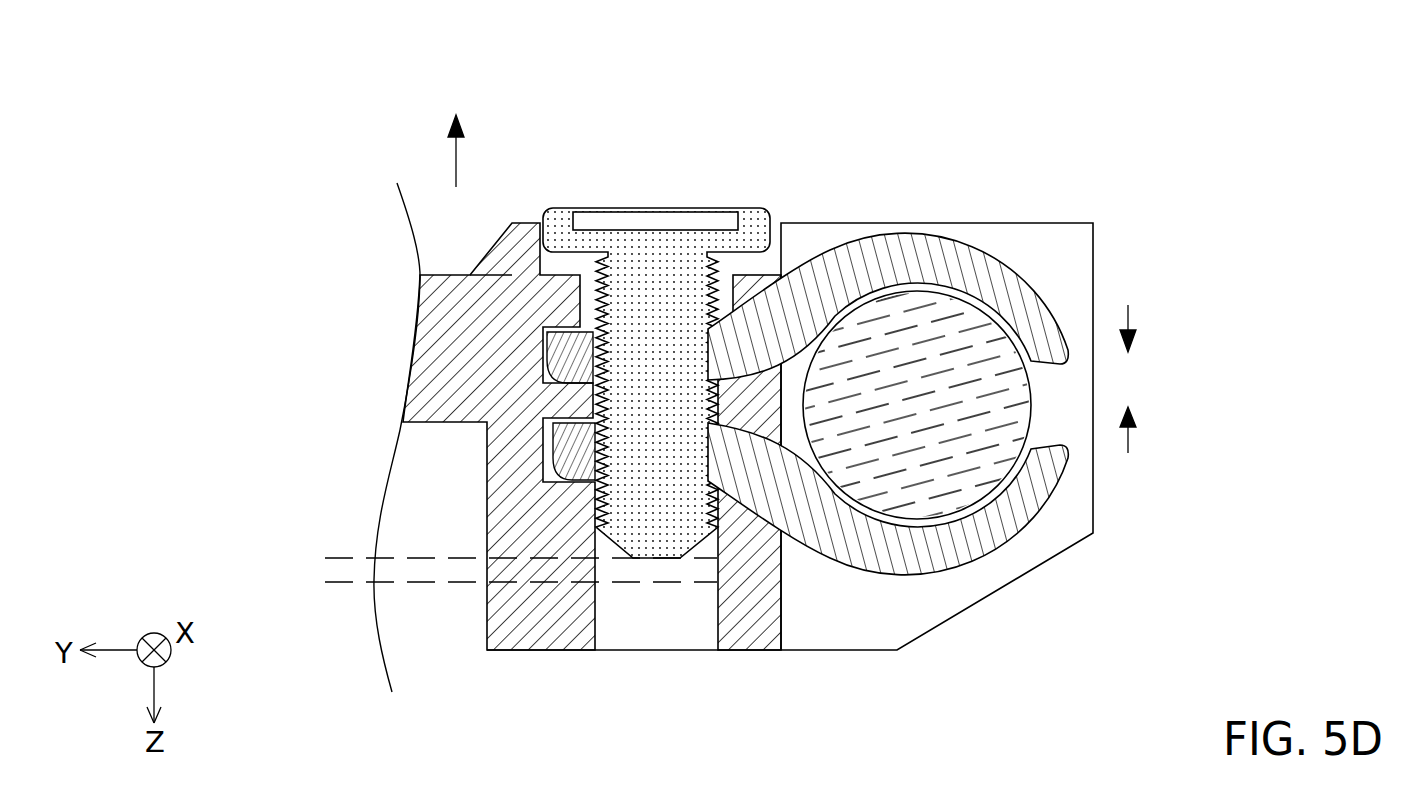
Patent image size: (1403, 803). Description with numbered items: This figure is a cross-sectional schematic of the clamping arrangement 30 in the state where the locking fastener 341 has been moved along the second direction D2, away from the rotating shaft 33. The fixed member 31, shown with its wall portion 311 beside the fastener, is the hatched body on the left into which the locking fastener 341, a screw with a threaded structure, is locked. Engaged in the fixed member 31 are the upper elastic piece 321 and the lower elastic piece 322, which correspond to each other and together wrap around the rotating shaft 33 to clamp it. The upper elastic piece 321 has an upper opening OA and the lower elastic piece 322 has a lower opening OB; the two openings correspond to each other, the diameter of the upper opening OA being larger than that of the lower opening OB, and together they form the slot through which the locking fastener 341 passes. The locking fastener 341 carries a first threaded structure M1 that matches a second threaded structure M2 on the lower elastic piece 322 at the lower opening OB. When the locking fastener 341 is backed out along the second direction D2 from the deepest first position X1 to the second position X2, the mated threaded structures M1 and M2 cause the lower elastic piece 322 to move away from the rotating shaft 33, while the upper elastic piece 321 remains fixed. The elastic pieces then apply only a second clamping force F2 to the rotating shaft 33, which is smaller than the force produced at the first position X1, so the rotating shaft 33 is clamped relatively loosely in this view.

The mounting assembly 30 is at (333, 68).
The fixed member 31 is at (550, 597).
The wall portion of base body 311 is at (748, 288).
The upper elastic piece 321 is at (962, 265).
The lower elastic piece 322 is at (928, 552).
The rotating shaft 33 is at (960, 478).
The locking fastener 341 is at (657, 197).
The first threaded structure M1 is at (712, 428).
The second threaded structure M2 is at (764, 522).
The upper opening OA is at (593, 364).
The lower opening OB is at (593, 450).
The first position X1 is at (500, 583).
The second position X2 is at (500, 559).
The second direction D2 is at (457, 167).
The second clamping force F2 is at (1128, 379).